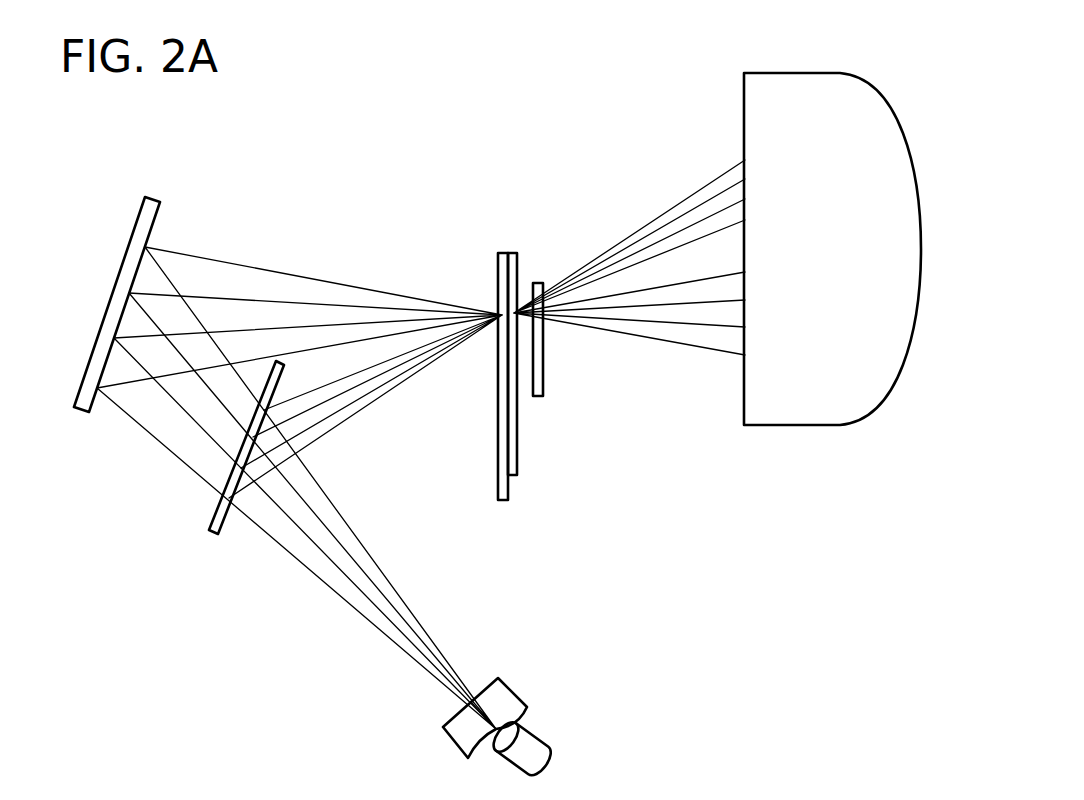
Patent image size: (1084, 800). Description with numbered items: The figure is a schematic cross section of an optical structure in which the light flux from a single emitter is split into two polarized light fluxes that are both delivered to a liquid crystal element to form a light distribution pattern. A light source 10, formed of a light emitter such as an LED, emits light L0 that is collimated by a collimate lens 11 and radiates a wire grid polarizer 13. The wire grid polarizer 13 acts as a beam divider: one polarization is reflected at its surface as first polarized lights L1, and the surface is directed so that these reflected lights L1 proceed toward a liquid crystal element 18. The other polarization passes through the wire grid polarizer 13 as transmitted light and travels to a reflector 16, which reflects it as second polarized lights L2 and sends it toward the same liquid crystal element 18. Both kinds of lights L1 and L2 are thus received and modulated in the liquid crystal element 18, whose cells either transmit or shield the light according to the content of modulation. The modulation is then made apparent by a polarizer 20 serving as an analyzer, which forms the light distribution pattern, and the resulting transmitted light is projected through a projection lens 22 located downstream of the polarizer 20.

The light source 10 is at (547, 744).
The collimate lens 11 is at (515, 675).
The wire grid polarizer 13 is at (212, 537).
The reflector 16 is at (153, 196).
The liquid crystal element 18 is at (509, 243).
The polarizer (analyzer) 20 is at (544, 386).
The projection lens 22 is at (805, 72).
The light beam from source L0 is at (343, 547).
The first polarized lights L1 is at (333, 402).
The second polarized lights L2 is at (267, 296).